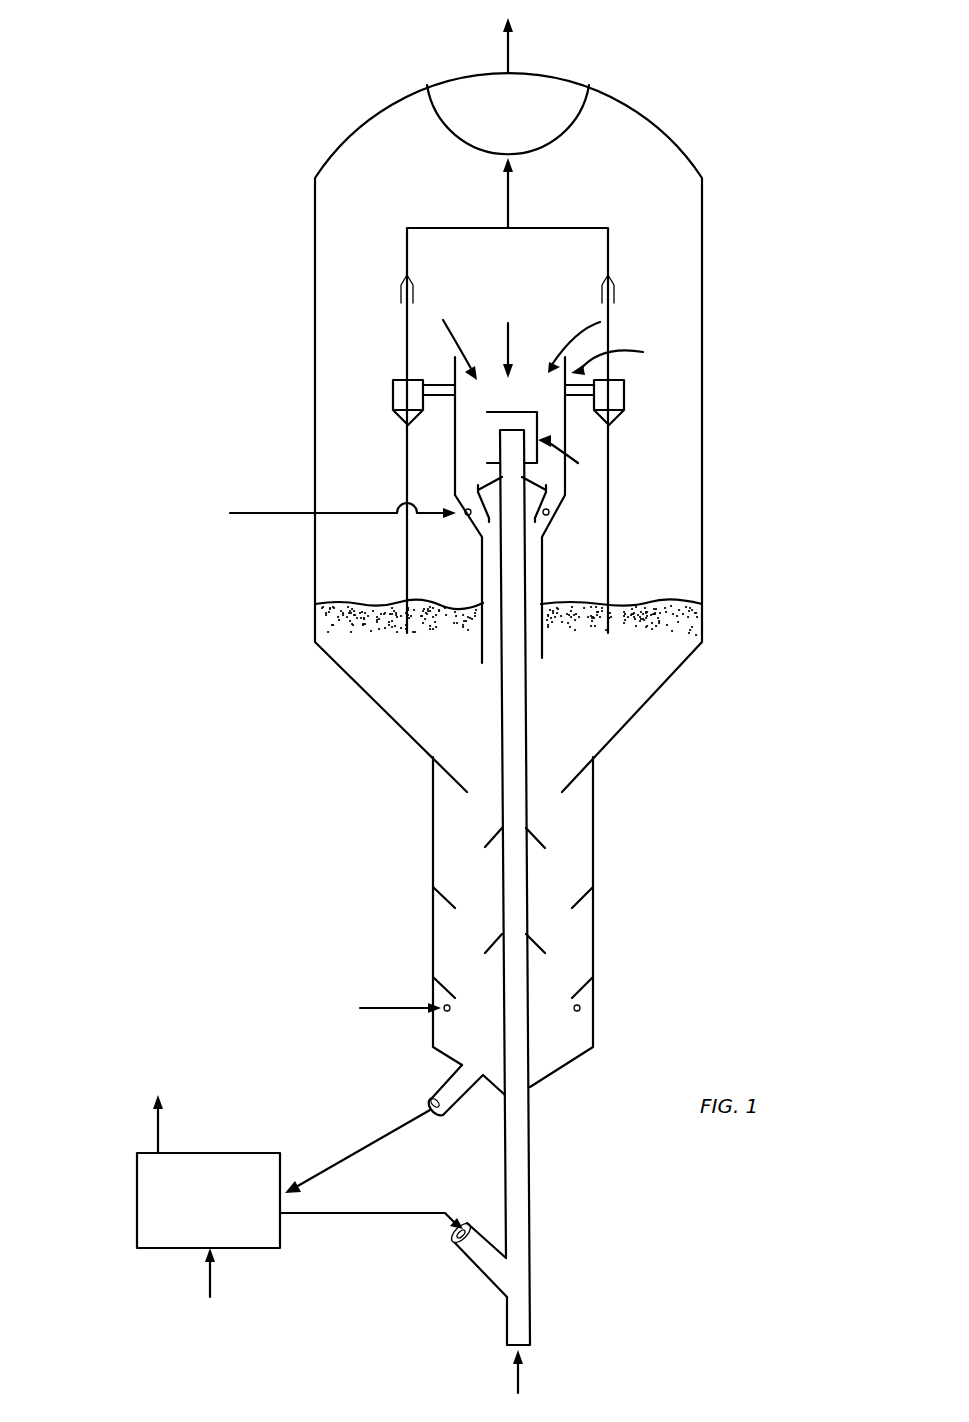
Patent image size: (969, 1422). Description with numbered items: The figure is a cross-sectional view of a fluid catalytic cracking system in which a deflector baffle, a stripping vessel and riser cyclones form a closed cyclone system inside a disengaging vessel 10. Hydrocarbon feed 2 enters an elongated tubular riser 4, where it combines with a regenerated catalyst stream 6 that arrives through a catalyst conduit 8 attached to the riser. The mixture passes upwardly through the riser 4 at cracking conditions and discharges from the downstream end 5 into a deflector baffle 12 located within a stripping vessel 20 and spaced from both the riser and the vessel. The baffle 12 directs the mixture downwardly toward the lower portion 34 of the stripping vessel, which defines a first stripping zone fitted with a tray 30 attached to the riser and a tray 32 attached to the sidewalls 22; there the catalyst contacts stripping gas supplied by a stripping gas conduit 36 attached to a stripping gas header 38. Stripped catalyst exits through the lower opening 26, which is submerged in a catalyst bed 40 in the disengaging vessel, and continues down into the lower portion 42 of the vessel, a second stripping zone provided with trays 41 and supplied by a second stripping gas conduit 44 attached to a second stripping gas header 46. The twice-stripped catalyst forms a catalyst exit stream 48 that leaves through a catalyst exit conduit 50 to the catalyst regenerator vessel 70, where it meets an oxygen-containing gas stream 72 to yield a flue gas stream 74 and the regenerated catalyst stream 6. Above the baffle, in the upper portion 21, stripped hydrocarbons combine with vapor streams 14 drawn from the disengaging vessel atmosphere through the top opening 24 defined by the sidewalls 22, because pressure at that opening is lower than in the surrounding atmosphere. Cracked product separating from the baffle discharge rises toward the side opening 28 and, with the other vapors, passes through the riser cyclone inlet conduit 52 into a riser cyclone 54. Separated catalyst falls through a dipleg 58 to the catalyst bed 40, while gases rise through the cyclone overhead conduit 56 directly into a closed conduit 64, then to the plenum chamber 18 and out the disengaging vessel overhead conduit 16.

The hydrocarbon feed 2 is at (521, 1380).
The riser 4 is at (531, 1151).
The downstream end of riser 5 is at (500, 450).
The catalyst stream 6 is at (352, 1215).
The catalyst conduit 8 is at (476, 1265).
The disengaging vessel 10 is at (702, 295).
The deflector baffle 12 is at (570, 456).
The vapor streams 14 is at (500, 345).
The disengaging vessel overhead conduit 16 is at (510, 56).
The disengaging vessel plenum chamber 18 is at (450, 140).
The stripping vessel 20 is at (620, 359).
The upper portion of stripping vessel 21 is at (450, 376).
The sidewalls of stripping vessel 22 is at (454, 455).
The top opening 24 is at (525, 355).
The lower opening 26 is at (483, 650).
The side opening 28 is at (565, 390).
The tray 30 is at (535, 478).
The tray 32 is at (565, 506).
The lower portion of stripping vessel 34 is at (455, 510).
The stripping gas conduit 36 is at (270, 513).
The stripping gas header 38 is at (470, 520).
The catalyst bed 40 is at (598, 707).
The trays 41 is at (500, 934).
The lower portion of disengaging vessel 42 is at (580, 832).
The second stripping gas conduit 44 is at (390, 1008).
The second stripping gas header 46 is at (450, 1013).
The catalyst exit stream 48 is at (380, 1140).
The catalyst exit conduit 50 is at (447, 1080).
The riser cyclone inlet conduit 52 is at (437, 400).
The riser cyclone 54 is at (393, 406).
The cyclone overhead conduit 56 is at (406, 370).
The dipleg 58 is at (407, 545).
The closed conduit 64 is at (407, 252).
The catalyst regenerator vessel 70 is at (137, 1192).
The oxygen-containing gas stream 72 is at (212, 1283).
The flue gas stream 74 is at (160, 1135).